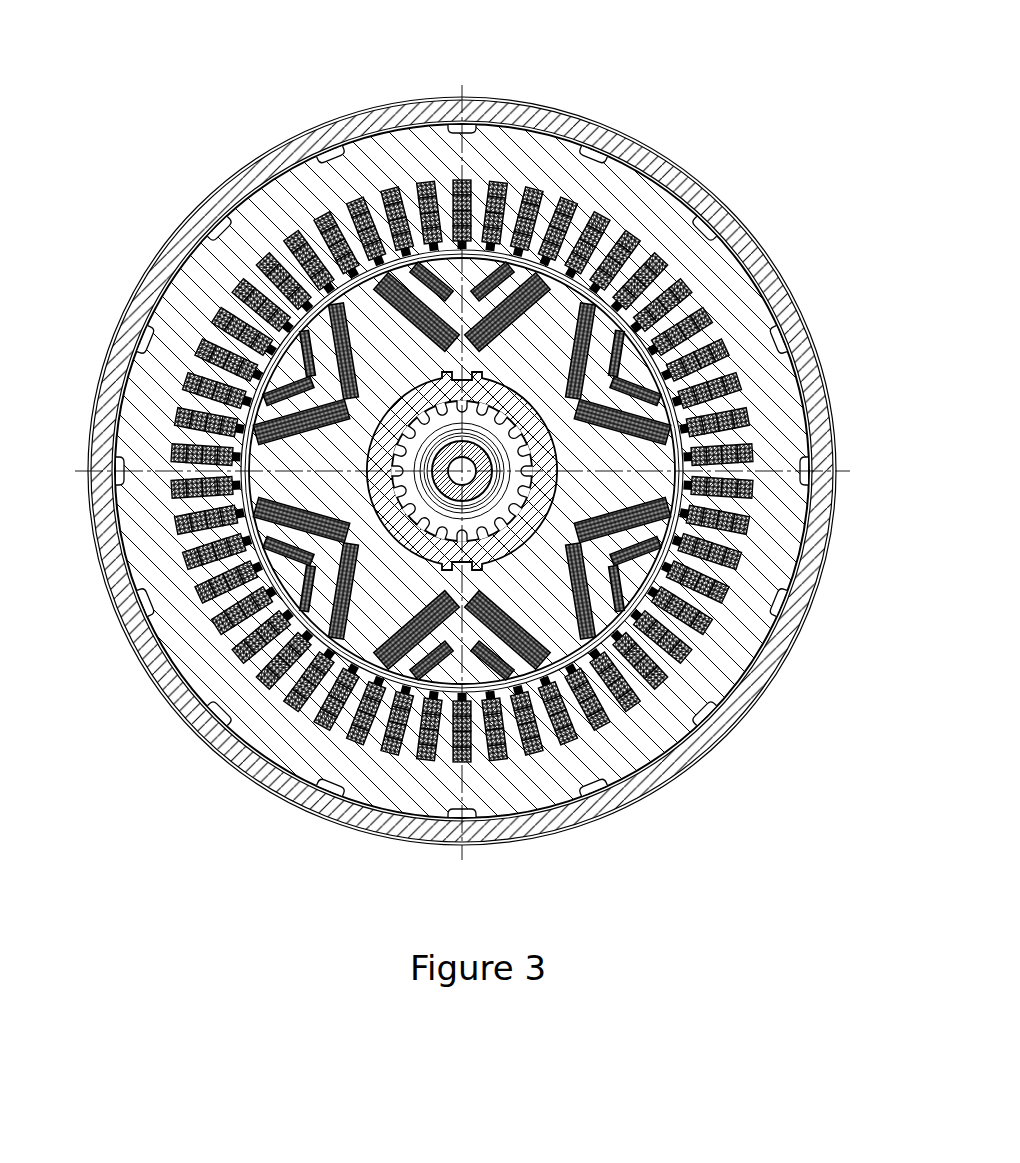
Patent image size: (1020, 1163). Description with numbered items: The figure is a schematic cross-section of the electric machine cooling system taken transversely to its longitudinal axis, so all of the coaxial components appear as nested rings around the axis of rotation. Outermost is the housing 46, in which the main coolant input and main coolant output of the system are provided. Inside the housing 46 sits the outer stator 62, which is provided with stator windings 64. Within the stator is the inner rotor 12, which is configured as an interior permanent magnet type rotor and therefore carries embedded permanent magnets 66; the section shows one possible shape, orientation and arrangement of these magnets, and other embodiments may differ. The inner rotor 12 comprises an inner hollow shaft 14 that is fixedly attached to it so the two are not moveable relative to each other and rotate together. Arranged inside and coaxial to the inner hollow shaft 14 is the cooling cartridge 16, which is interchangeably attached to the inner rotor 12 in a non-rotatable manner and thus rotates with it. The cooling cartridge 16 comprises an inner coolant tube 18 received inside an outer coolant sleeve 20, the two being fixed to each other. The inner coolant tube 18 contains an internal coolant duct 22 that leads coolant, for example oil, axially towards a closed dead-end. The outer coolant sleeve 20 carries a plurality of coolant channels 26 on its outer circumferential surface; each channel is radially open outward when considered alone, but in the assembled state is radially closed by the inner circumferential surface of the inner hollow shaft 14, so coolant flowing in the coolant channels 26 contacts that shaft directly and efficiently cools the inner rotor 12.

The inner rotor 12 is at (272, 185).
The inner hollow shaft 14 is at (700, 392).
The cooling cartridge 16 is at (523, 483).
The inner coolant tube 18 is at (545, 373).
The outer coolant sleeve 20 is at (496, 501).
The internal coolant duct 22 is at (740, 612).
The coolant channels 26 is at (732, 697).
The housing 46 is at (522, 117).
The outer stator 62 is at (570, 170).
The stator windings 64 is at (643, 297).
The embedded permanent magnets 66 is at (172, 270).